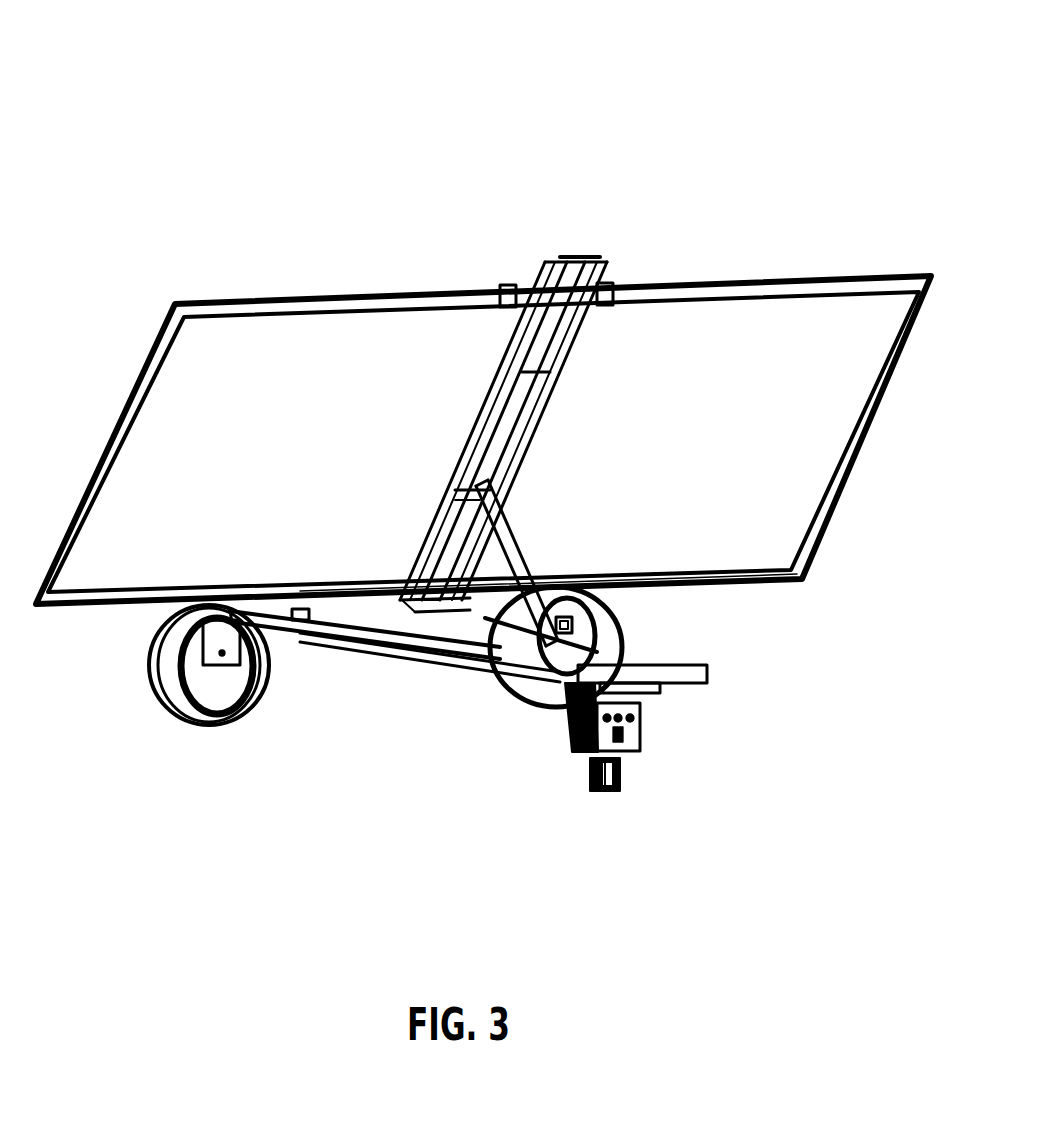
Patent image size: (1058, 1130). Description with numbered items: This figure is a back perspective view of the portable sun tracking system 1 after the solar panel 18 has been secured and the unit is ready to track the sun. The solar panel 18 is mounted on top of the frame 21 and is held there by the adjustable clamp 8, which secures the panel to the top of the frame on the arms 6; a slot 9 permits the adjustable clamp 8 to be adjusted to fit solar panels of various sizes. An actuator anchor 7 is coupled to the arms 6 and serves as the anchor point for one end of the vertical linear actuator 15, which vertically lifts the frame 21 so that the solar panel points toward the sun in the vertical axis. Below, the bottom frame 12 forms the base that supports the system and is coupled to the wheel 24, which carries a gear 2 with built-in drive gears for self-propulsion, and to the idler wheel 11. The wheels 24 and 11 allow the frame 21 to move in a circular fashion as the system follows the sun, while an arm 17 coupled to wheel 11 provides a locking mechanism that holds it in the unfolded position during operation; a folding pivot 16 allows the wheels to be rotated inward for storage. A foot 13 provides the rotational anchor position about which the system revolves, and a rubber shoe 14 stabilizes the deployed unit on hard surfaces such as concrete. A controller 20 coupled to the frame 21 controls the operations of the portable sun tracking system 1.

The portable sun tracking system 1 is at (192, 137).
The gear 2 is at (585, 637).
The arms 6 is at (410, 556).
The actuator anchor 7 is at (500, 490).
The adjustable clamp 8 is at (500, 290).
The slot 9 is at (602, 293).
The wheel 11 is at (208, 683).
The bottom frame 12 is at (470, 643).
The foot 13 is at (587, 790).
The rubber shoe 14 is at (615, 792).
The vertical linear actuator 15 is at (530, 660).
The folding pivot 16 is at (392, 638).
The arm 17 is at (305, 627).
The solar panel 18 is at (103, 557).
The controller 20 is at (642, 735).
The frame 21 is at (462, 412).
The wheel 24 is at (610, 590).